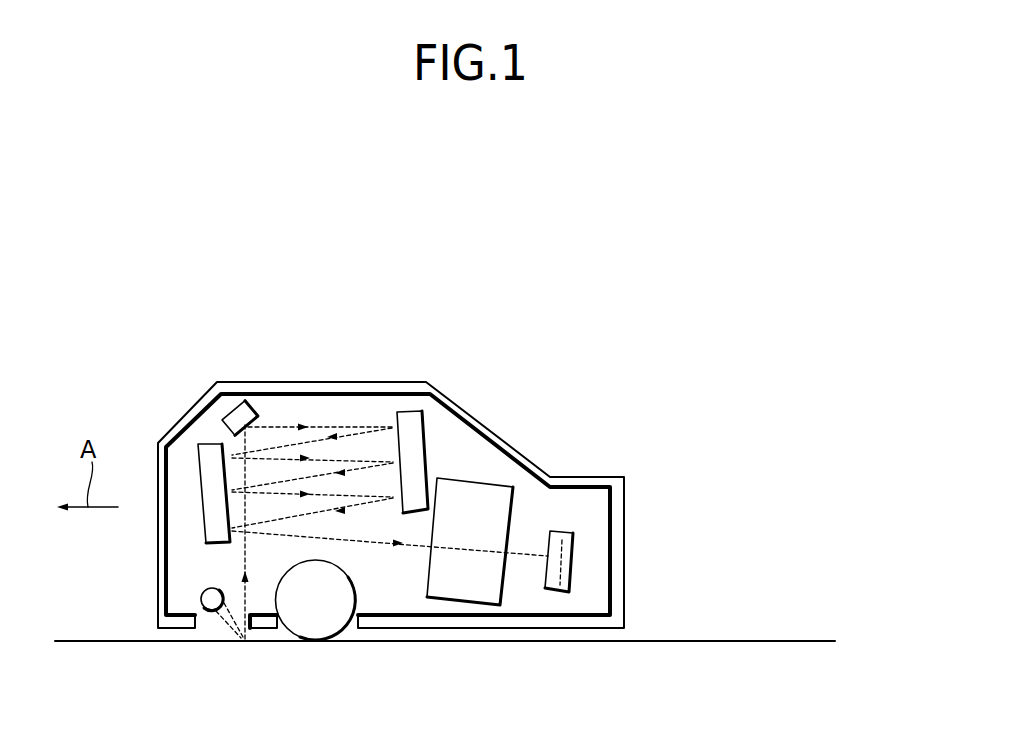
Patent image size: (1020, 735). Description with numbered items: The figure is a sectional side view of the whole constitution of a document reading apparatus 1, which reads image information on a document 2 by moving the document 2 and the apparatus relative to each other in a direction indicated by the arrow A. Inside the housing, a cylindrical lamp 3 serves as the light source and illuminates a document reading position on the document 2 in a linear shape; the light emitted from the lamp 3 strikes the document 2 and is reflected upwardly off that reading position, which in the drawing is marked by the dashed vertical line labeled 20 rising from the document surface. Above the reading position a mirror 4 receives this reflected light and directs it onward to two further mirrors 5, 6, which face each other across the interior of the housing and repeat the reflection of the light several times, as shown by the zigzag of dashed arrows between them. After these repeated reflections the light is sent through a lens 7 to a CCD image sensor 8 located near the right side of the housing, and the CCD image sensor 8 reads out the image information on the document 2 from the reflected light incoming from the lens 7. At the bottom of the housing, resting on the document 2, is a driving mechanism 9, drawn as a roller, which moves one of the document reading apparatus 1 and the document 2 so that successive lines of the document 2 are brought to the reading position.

The document reading apparatus 1 is at (329, 345).
The document 2 is at (733, 640).
The lamp 3 is at (200, 598).
The mirror 4 is at (229, 415).
The mirror 5 is at (411, 412).
The mirror 6 is at (210, 490).
The lens 7 is at (486, 478).
The CCD image sensor 8 is at (574, 545).
The driving mechanism 9 is at (348, 629).
The reading position 20 is at (248, 644).